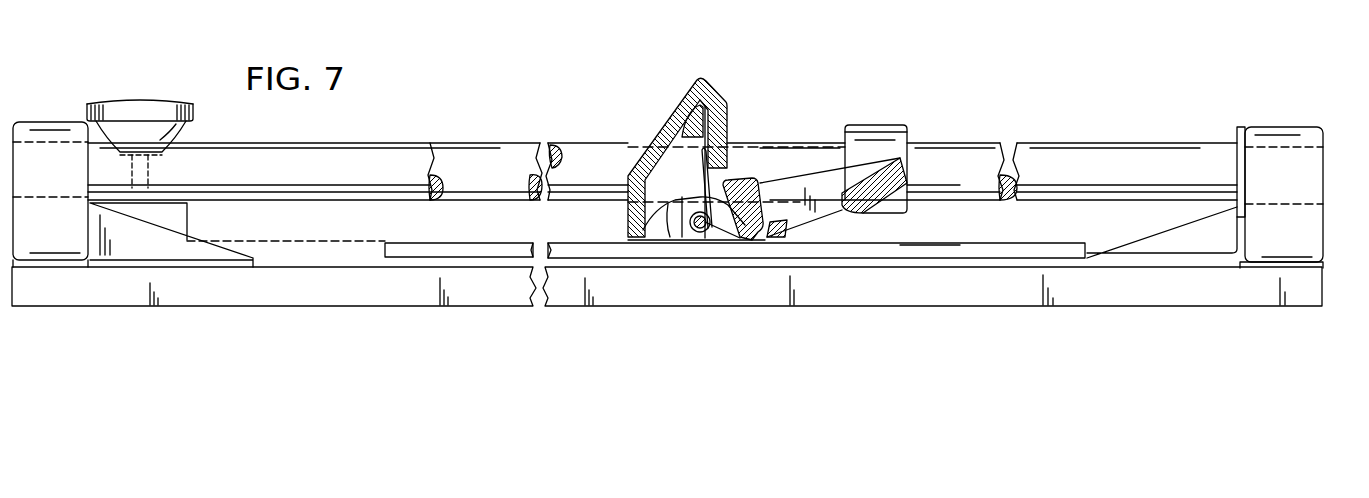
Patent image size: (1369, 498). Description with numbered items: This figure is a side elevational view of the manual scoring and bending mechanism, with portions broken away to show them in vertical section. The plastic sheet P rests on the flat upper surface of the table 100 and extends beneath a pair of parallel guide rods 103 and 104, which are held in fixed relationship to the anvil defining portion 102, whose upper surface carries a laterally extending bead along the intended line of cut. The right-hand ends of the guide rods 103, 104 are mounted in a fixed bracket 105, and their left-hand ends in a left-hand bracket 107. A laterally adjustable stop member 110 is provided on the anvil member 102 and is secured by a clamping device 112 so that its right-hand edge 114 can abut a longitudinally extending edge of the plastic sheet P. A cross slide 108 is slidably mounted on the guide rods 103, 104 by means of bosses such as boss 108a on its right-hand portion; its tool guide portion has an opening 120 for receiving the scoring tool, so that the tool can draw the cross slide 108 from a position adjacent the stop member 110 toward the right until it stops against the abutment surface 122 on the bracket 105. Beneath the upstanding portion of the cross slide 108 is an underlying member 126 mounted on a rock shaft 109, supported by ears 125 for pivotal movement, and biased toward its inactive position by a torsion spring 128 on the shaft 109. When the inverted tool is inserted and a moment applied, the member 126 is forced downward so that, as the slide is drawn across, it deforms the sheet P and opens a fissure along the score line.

The table 100 is at (1107, 268).
The anvil defining portion 102 is at (973, 260).
The guide rod 103 is at (472, 148).
The guide rod 104 is at (282, 143).
The fixed bracket 105 is at (1310, 252).
The left-hand bracket 107 is at (50, 128).
The cross slide 108 is at (698, 78).
The boss 108a is at (862, 124).
The rock shaft 109 is at (697, 232).
The laterally adjustable stop member 110 is at (188, 217).
The clamping device 112 is at (152, 98).
The right-hand edge 114 is at (385, 243).
The opening 120 is at (850, 213).
The abutment surface 122 is at (1238, 138).
The ears 125 is at (643, 226).
The underlying member 126 is at (750, 179).
The torsion spring 128 is at (690, 152).
The plastic sheet P is at (927, 245).